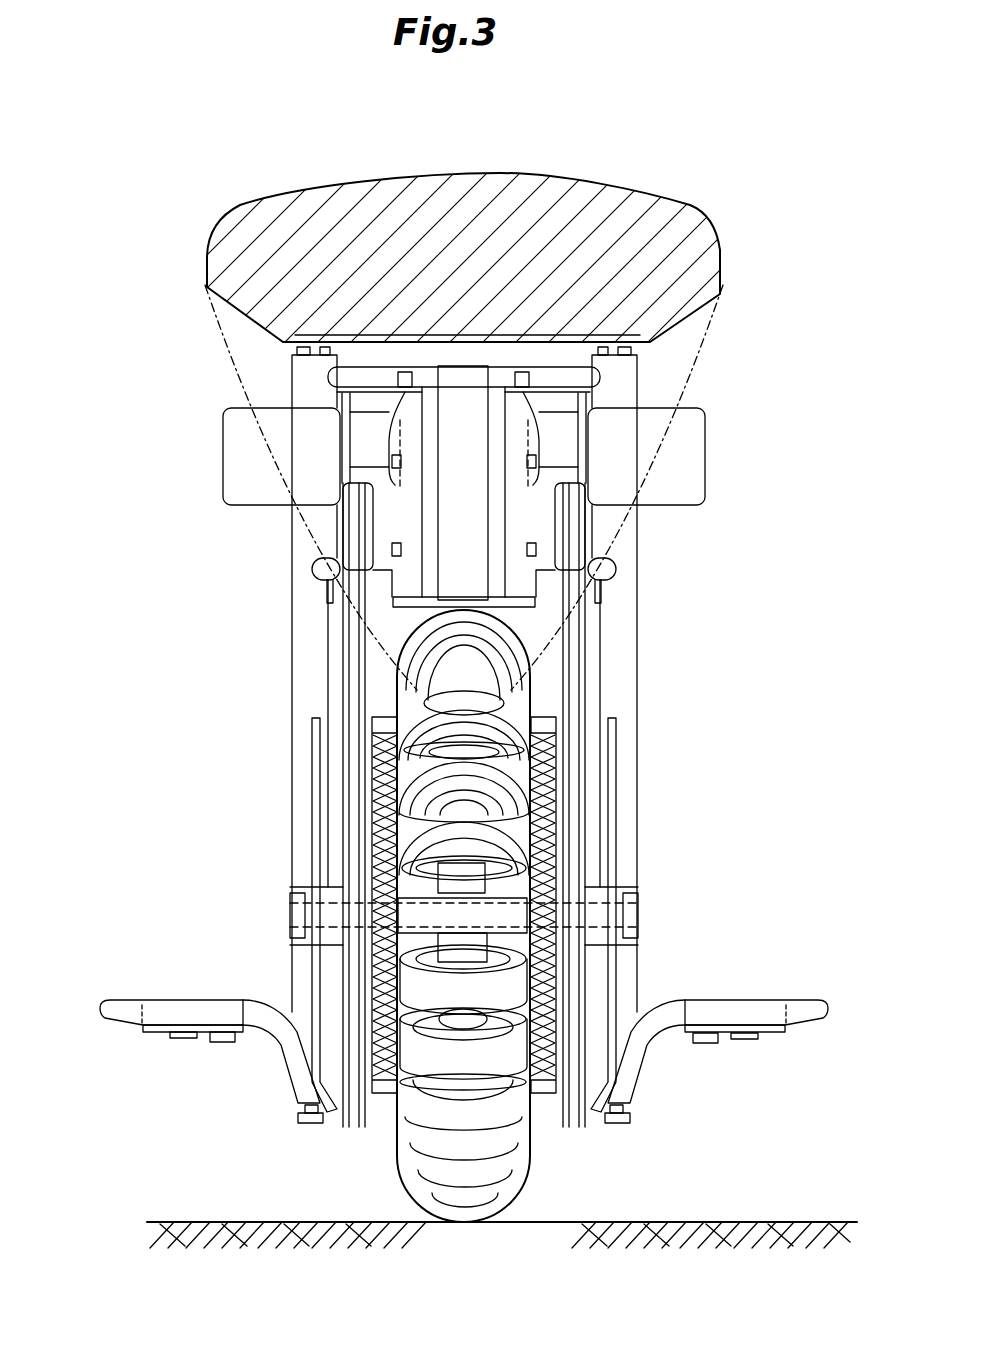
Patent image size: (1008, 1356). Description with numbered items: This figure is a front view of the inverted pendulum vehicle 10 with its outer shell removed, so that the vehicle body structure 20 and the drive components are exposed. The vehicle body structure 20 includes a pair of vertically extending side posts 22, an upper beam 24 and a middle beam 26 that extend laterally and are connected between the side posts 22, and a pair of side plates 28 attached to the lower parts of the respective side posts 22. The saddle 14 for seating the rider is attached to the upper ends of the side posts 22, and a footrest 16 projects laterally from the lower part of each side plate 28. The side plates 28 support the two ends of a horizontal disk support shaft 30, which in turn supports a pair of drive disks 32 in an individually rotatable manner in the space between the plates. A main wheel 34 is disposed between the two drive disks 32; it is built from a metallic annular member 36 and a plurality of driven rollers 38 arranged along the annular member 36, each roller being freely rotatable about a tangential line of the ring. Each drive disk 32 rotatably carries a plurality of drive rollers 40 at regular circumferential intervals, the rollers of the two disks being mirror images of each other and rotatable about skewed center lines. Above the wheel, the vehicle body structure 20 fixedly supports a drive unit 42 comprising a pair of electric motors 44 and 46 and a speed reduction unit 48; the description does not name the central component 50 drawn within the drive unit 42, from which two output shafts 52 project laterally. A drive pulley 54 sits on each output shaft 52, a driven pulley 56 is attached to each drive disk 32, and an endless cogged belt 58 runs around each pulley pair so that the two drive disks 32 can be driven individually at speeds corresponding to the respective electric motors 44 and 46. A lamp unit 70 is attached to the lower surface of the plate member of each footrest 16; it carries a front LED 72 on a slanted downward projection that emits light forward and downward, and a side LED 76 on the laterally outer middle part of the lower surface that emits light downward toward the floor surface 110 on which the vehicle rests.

The inverted pendulum vehicle 10 is at (676, 66).
The saddle 14 is at (582, 178).
The footrests 16 is at (170, 1000).
The vehicle body structure 20 is at (642, 634).
The side posts 22 is at (296, 590).
The upper beam 24 is at (598, 378).
The middle beam 26 is at (592, 567).
The side plates 28 is at (343, 968).
The disk support shaft 30 is at (640, 890).
The drive disks 32 is at (316, 962).
The main wheel 34 is at (536, 656).
The annular member 36 is at (453, 887).
The driven rollers 38 is at (513, 775).
The drive rollers 40 is at (387, 838).
The drive unit 42 is at (545, 406).
The electric motor 44 is at (228, 477).
The electric motor 46 is at (688, 473).
The speed reduction unit 48 is at (551, 437).
The column 50 is at (452, 442).
The output shafts 52 is at (380, 506).
The drive pulley 54 is at (336, 547).
The driven pulley 56 is at (320, 728).
The endless cogged belt 58 is at (351, 662).
The lamp unit 70 is at (152, 1040).
The front LED 72 is at (222, 1043).
The side LED 76 is at (182, 1040).
The floor surface 110 is at (562, 1222).